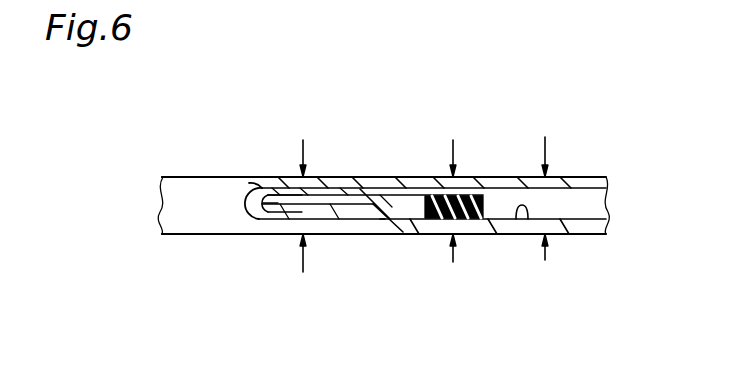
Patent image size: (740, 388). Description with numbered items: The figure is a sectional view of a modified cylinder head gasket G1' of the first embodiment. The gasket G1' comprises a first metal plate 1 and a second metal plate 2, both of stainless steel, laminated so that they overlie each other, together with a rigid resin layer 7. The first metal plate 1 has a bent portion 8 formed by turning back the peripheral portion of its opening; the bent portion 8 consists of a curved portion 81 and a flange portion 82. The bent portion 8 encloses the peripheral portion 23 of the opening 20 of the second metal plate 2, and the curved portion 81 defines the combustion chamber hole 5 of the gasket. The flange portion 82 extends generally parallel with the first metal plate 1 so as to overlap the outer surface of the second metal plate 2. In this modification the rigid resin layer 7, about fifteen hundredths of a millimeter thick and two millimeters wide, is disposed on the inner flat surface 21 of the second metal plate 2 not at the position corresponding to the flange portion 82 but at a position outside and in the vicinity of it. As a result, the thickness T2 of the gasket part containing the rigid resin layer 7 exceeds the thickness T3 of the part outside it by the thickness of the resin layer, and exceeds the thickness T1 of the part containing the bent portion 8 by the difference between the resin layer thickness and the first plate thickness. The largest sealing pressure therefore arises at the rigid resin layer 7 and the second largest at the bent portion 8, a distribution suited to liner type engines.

The modified gasket G1' is at (438, 160).
The first metal plate 1 is at (572, 177).
The second metal plate 2 is at (490, 219).
The combustion chamber hole 5 is at (208, 197).
The rigid resin layer 7 is at (462, 196).
The bent portion 8 is at (325, 264).
The curved portion 81 is at (247, 211).
The flange portion 82 is at (333, 215).
The opening 20 is at (253, 177).
The peripheral portion 23 is at (287, 188).
The inner flat surface 21 is at (523, 219).
The thickness of gasket part with bent portion T1 is at (306, 224).
The thickness of gasket part with rigid resin layer T2 is at (452, 224).
The thickness of gasket part outside resin layer T3 is at (543, 219).